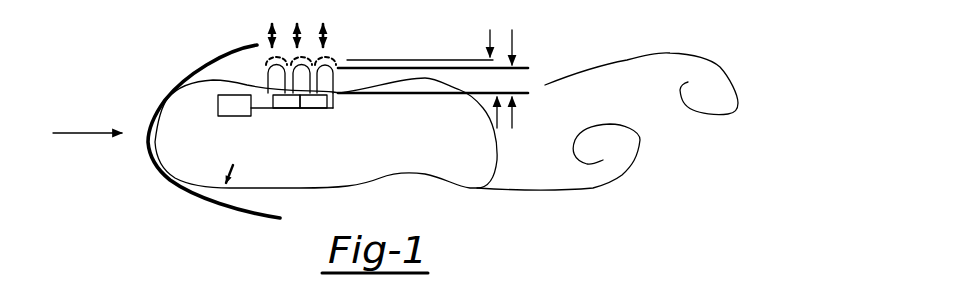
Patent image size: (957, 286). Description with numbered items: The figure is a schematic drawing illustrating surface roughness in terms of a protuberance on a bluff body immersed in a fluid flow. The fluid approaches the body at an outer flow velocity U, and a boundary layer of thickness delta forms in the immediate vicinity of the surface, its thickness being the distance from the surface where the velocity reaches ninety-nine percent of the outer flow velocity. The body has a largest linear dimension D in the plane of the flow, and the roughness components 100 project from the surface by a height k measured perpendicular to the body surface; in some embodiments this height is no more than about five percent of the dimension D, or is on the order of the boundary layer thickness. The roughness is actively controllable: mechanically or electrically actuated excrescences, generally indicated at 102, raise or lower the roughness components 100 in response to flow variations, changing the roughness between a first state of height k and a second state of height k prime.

The surface roughness components 100 is at (330, 78).
The actuation mechanism 102 is at (230, 116).
The largest linear dimension D is at (491, 139).
The roughness height k is at (435, 79).
The outer flow velocity U is at (87, 117).